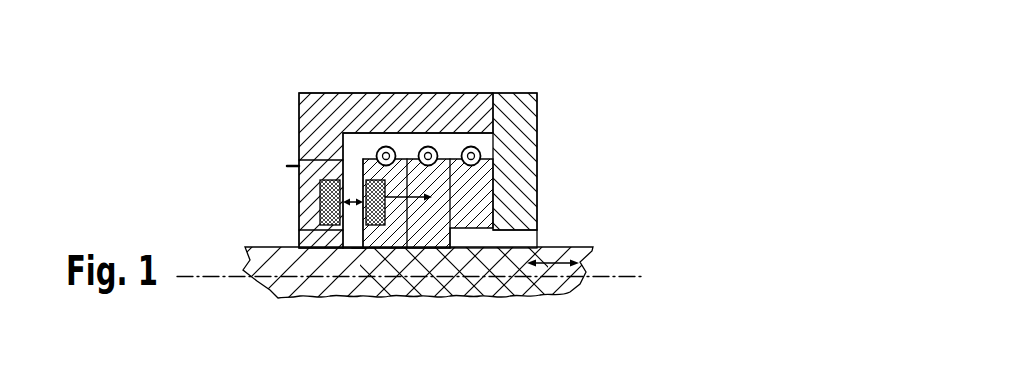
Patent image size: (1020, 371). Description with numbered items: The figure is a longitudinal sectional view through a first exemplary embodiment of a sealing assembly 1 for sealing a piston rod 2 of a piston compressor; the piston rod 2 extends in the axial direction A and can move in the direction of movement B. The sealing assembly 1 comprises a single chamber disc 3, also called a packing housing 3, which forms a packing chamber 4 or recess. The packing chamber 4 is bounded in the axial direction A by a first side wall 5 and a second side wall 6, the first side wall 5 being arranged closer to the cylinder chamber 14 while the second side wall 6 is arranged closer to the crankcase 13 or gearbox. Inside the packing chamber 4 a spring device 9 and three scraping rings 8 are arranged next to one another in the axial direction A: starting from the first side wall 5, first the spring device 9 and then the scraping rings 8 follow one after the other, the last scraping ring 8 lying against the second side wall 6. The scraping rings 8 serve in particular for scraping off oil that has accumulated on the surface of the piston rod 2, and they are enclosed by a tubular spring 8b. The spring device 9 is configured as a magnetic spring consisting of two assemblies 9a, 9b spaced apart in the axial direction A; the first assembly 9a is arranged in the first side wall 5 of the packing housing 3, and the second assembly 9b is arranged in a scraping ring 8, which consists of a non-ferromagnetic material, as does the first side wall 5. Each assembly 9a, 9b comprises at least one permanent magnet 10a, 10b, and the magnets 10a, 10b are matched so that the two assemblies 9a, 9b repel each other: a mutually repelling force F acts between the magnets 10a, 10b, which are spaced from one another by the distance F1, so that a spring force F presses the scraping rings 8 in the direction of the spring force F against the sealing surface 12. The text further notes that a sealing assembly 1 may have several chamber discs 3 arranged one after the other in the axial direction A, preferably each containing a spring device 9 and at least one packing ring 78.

The sealing assembly 1 is at (551, 74).
The piston rod 2 is at (258, 287).
The chamber disc 3 is at (368, 112).
The packing chamber 4 is at (410, 148).
The first side wall 5 is at (352, 133).
The second side wall 6 is at (492, 135).
The scraping ring 8 is at (442, 285).
The tubular spring 8b is at (386, 146).
The spring device 9 is at (343, 165).
The first assembly 9a is at (320, 182).
The second assembly 9b is at (438, 249).
The magnet 10a is at (366, 188).
The magnet 10b is at (358, 250).
The sealing surface 12 is at (520, 205).
The crankcase 13 is at (641, 229).
The cylinder chamber 14 is at (170, 222).
The packing ring 78 is at (438, 165).
The axial direction A is at (627, 278).
The direction of movement B is at (560, 284).
The spring force F is at (292, 161).
The distance F1 is at (284, 291).